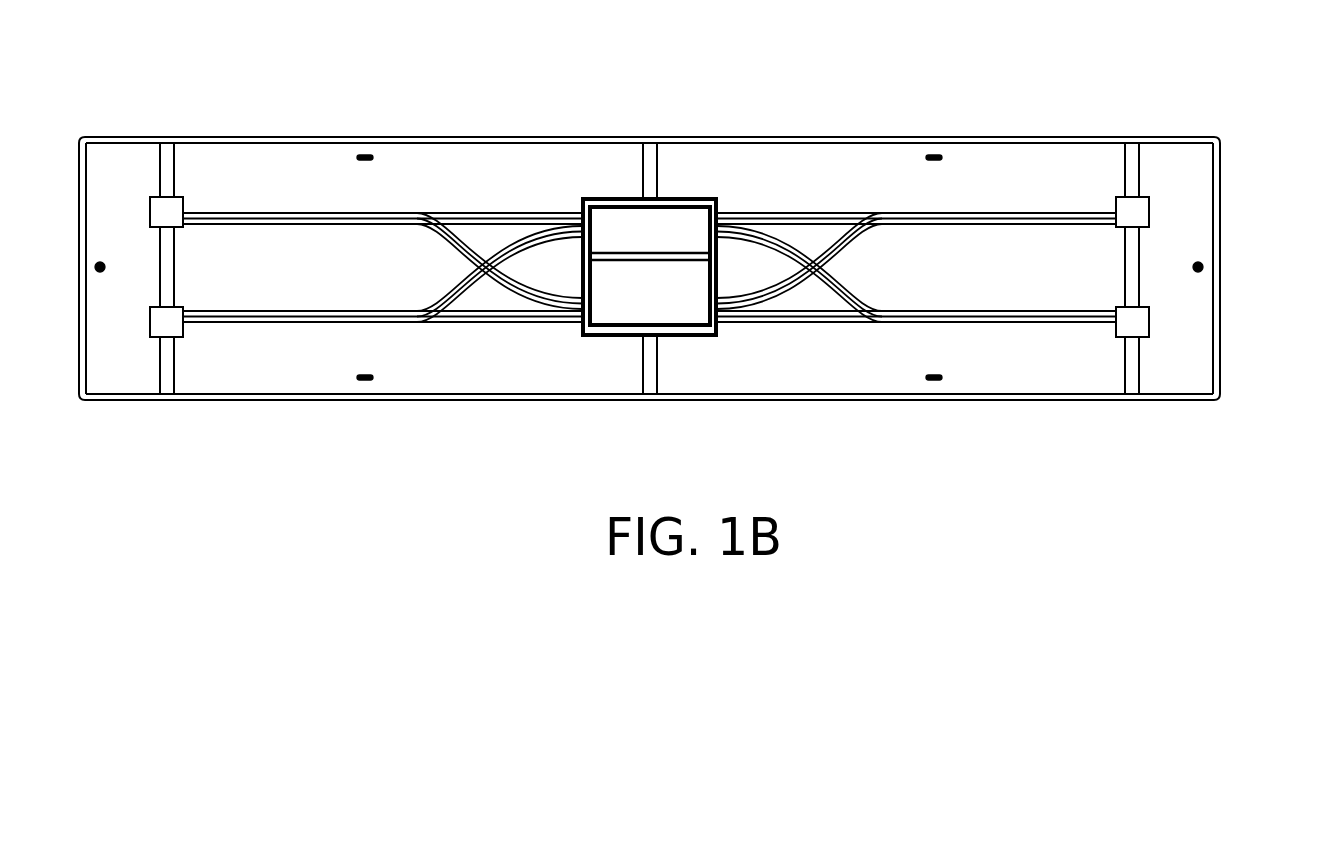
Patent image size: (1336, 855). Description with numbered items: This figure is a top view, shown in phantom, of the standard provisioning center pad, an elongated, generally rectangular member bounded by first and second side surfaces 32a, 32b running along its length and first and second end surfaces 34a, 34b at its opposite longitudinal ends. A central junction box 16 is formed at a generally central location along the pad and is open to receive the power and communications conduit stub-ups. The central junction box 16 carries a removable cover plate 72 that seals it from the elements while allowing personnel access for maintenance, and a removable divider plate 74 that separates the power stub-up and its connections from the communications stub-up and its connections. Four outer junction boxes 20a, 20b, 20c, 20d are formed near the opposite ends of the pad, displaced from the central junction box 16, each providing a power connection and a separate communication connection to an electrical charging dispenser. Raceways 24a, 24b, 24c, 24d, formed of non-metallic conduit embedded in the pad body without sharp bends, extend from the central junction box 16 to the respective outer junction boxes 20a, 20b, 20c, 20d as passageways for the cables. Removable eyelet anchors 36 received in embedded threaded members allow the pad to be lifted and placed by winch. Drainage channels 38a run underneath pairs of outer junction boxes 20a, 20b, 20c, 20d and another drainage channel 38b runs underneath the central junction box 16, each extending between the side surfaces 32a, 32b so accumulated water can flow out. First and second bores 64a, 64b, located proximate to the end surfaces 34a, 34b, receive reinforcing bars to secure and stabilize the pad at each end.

The central junction box 16 is at (664, 258).
The outer junction box 20a is at (185, 203).
The outer junction box 20b is at (185, 333).
The outer junction box 20c is at (1113, 203).
The outer junction box 20d is at (1113, 333).
The raceway 24a is at (568, 194).
The raceway 24b is at (557, 330).
The raceway 24c is at (750, 209).
The raceway 24d is at (750, 325).
The first side surface 32a is at (600, 403).
The second side surface 32b is at (847, 134).
The first end surface 34a is at (75, 165).
The second end surface 34b is at (1225, 163).
The eyelet anchor 36 is at (363, 148).
The drainage channel 38a is at (167, 370).
The drainage channel 38b is at (650, 377).
The first bore 64a is at (95, 262).
The second bore 64b is at (1205, 262).
The cover plate 72 is at (672, 226).
The divider plate 74 is at (720, 325).